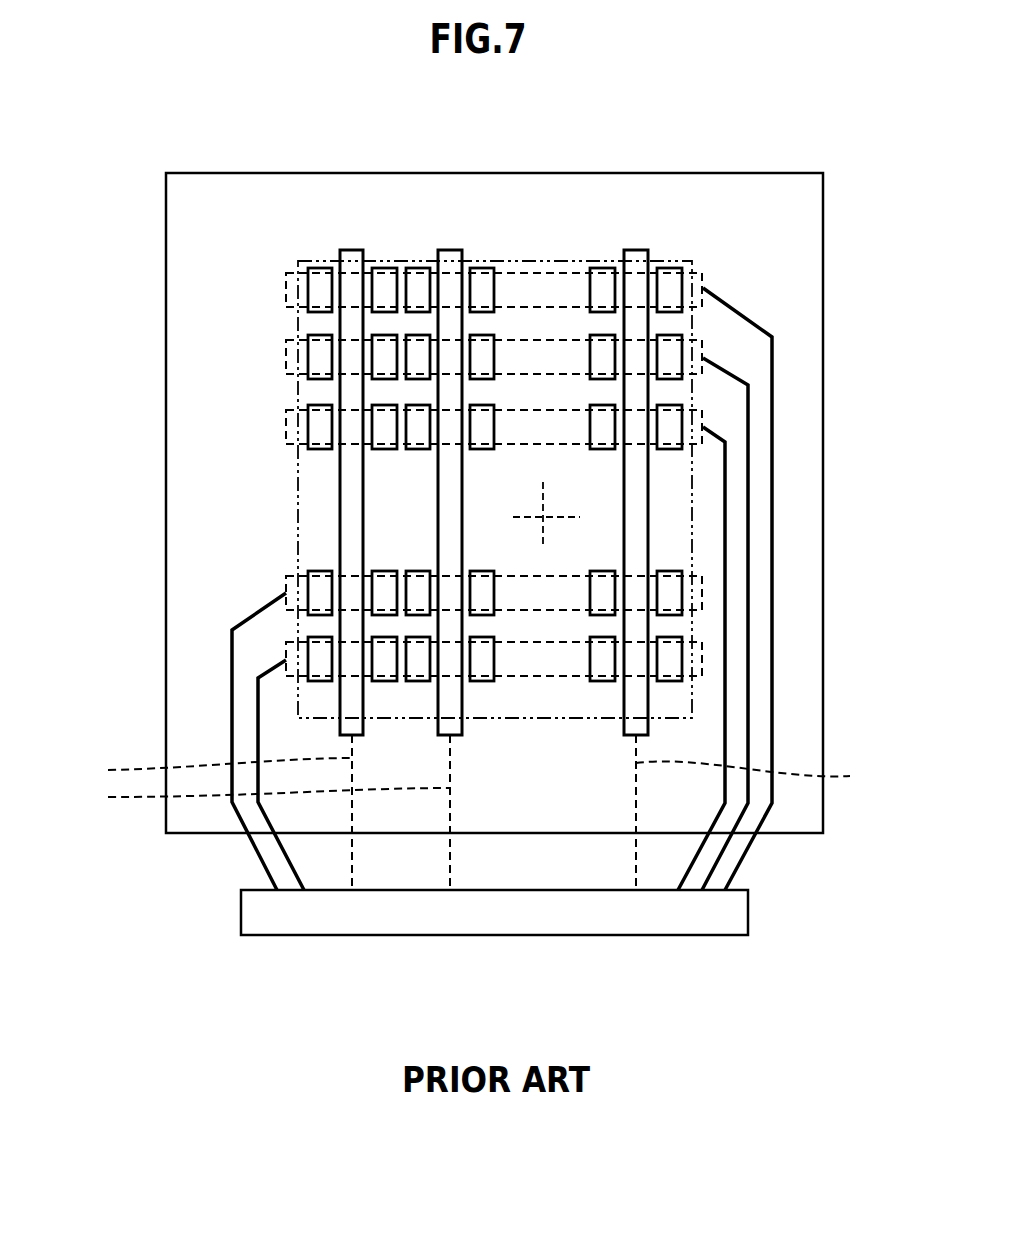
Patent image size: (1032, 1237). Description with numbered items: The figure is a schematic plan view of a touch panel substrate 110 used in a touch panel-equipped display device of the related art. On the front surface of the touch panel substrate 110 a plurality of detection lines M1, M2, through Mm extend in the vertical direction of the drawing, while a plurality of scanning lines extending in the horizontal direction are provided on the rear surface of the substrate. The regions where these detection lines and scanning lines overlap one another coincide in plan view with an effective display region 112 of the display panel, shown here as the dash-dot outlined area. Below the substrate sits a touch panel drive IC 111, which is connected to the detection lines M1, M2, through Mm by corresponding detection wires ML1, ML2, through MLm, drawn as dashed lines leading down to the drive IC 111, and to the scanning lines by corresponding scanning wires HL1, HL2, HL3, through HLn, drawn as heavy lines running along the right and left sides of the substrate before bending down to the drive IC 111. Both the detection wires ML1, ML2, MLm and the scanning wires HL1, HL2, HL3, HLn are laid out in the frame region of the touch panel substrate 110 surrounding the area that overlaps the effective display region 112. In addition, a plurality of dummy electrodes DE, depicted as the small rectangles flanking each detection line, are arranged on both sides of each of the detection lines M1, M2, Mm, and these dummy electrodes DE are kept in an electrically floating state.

The touch panel substrate 110 is at (166, 374).
The touch panel drive IC 111 is at (498, 935).
The effective display region 112 is at (692, 386).
The dummy electrode DE is at (700, 277).
The detection line M1 is at (351, 250).
The detection line M2 is at (450, 250).
The detection line Mm is at (637, 250).
The scanning wire HL1 is at (772, 450).
The scanning wire HL2 is at (748, 511).
The scanning wire HL3 is at (725, 575).
The scanning wire HLn is at (232, 647).
The detection wire ML1 is at (203, 764).
The detection wire ML2 is at (252, 801).
The detection wire MLm is at (773, 777).